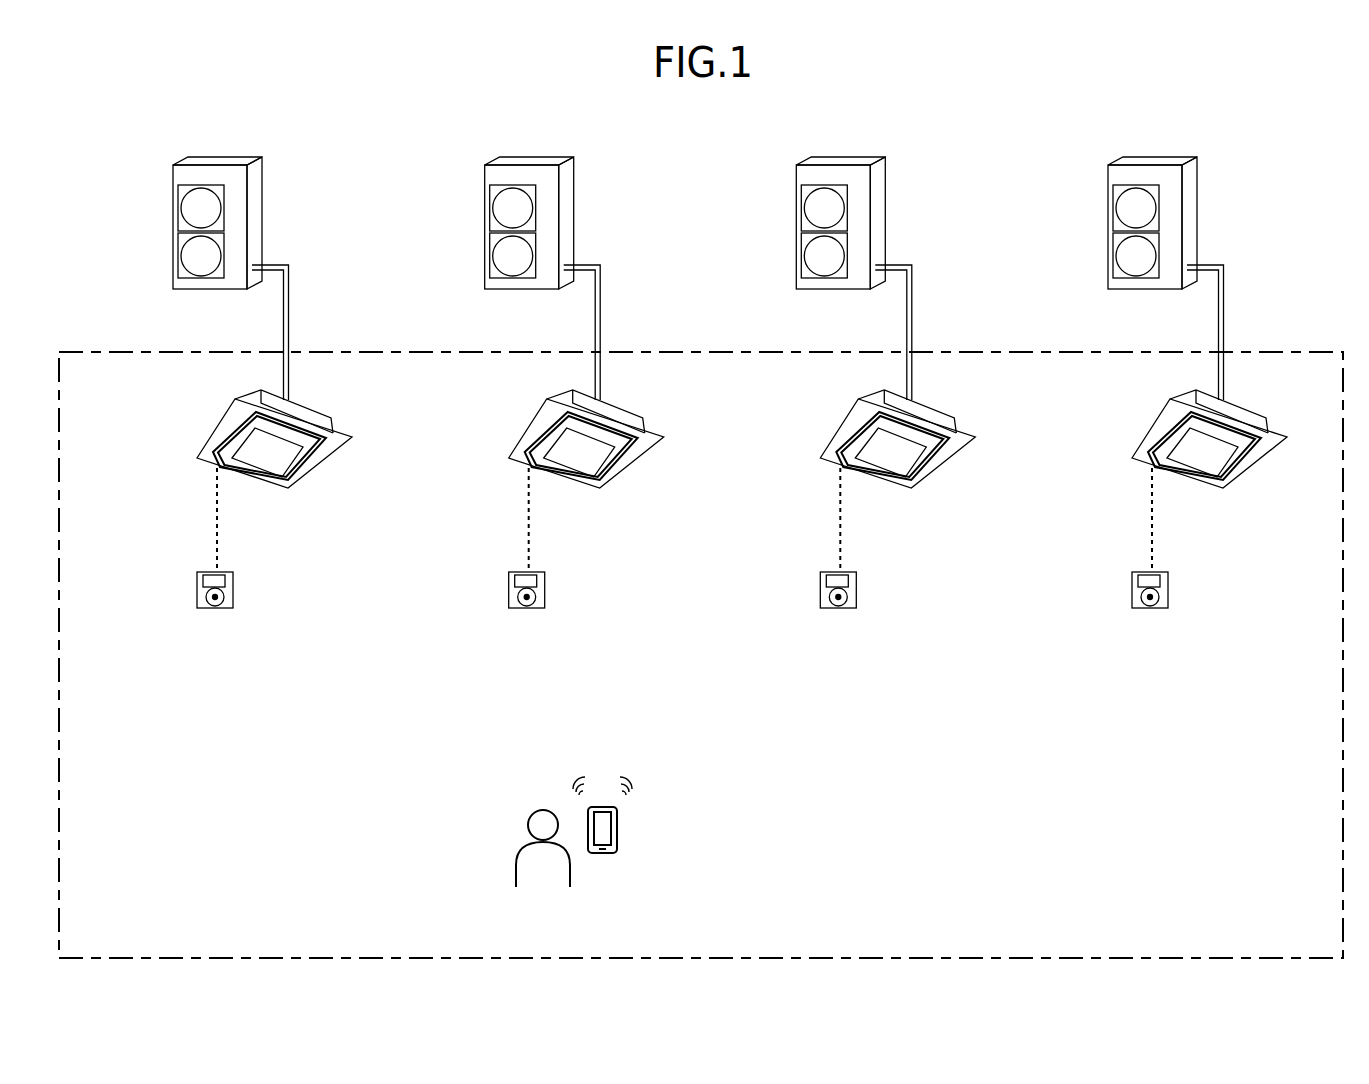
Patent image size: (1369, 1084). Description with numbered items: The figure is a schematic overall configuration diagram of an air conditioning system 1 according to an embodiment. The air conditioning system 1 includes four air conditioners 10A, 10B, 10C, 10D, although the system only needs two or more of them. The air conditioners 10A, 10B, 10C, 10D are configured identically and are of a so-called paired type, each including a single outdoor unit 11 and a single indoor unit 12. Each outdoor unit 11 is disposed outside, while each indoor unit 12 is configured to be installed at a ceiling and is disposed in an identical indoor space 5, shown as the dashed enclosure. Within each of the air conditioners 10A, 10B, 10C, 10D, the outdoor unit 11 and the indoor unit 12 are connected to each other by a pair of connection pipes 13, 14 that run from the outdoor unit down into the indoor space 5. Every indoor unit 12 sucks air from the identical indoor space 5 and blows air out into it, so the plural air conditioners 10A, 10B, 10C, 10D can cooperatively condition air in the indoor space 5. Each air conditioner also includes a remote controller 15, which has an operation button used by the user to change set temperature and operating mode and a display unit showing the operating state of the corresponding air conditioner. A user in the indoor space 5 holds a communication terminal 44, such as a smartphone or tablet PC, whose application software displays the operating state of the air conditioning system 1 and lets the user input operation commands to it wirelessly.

The air conditioning system 1 is at (130, 150).
The indoor space 5 is at (713, 722).
The air conditioner 10A is at (190, 424).
The air conditioner 10B is at (533, 383).
The air conditioner 10C is at (844, 383).
The air conditioner 10D is at (1156, 383).
The outdoor unit 11 is at (258, 220).
The indoor unit 12 is at (313, 471).
The connection pipe 13 is at (283, 324).
The connection pipe 14 is at (290, 307).
The remote controller 15 is at (234, 590).
The communication terminal 44 is at (618, 829).